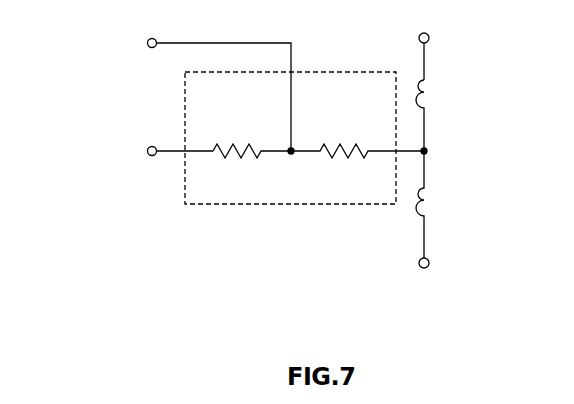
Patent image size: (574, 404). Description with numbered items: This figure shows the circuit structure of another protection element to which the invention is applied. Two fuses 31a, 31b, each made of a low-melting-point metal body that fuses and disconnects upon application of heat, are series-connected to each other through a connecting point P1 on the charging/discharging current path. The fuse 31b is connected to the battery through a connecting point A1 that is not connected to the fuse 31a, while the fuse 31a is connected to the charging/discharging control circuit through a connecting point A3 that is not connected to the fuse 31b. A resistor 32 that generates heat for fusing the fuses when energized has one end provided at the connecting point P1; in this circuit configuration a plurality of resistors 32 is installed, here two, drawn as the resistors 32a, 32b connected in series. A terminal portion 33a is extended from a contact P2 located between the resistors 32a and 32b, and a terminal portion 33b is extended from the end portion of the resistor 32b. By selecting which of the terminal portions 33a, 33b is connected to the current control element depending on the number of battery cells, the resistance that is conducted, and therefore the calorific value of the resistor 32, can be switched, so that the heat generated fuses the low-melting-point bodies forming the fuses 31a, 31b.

The terminal portion 33a is at (148, 43).
The terminal portion 33b is at (148, 151).
The resistor 32 is at (311, 205).
The resistor 32a is at (370, 122).
The resistor 32b is at (240, 145).
The fuse 31a is at (432, 193).
The fuse 31b is at (432, 86).
The connecting point P1 is at (438, 152).
The contact P2 is at (292, 161).
The connecting point A1 is at (425, 42).
The connecting point A3 is at (425, 259).